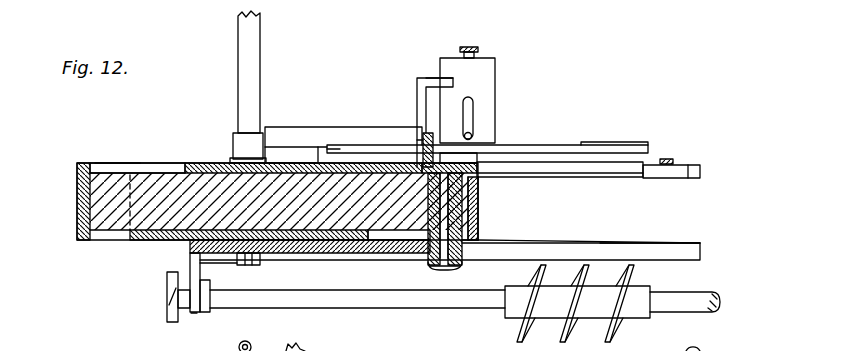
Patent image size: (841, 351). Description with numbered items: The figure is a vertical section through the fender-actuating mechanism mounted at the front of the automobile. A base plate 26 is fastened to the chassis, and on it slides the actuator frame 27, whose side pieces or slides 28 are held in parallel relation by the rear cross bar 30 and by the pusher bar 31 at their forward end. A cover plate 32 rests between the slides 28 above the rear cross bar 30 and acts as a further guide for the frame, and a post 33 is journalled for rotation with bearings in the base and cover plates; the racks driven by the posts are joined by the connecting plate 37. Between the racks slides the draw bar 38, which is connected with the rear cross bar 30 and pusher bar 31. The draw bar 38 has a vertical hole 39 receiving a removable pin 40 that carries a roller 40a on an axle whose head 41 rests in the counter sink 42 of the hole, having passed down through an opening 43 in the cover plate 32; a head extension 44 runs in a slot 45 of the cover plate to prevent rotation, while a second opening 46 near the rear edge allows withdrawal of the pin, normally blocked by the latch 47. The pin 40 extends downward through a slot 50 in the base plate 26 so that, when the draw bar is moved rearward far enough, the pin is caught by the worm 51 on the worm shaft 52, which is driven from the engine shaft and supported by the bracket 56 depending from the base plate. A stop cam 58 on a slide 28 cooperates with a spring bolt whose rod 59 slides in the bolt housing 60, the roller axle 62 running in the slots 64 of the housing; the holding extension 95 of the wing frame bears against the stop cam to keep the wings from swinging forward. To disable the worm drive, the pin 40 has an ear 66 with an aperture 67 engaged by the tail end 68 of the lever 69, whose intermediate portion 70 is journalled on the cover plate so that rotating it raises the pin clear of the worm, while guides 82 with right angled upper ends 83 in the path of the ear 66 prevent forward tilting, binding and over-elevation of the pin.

The base plate 26 is at (700, 250).
The actuator frame 27 is at (118, 160).
The slides 28 is at (163, 166).
The rear cross bar 30 is at (480, 215).
The pusher bar 31 is at (77, 197).
The cover plate 32 is at (213, 160).
The post 33 is at (261, 45).
The connecting plate 37 is at (167, 244).
The draw bar 38 is at (150, 221).
The vertical hole 39 is at (480, 222).
The pin 40 is at (480, 203).
The roller 40a is at (490, 238).
The head 41 is at (416, 168).
The counter sink 42 is at (480, 188).
The opening 43 is at (470, 161).
The head extension 44 is at (478, 170).
The slot 45 is at (613, 162).
The opening 46 is at (680, 179).
The latch 47 is at (668, 158).
The slot 50 is at (691, 242).
The worm 51 is at (518, 332).
The worm shaft 52 is at (413, 304).
The bracket 56 is at (184, 308).
The stop cam 58 is at (299, 131).
The rod 59 is at (479, 50).
The bolt housing 60 is at (488, 76).
The axle 62 is at (472, 136).
The slots 64 is at (470, 113).
The ear 66 is at (422, 135).
The aperture 67 is at (418, 140).
The tail end 68 is at (582, 144).
The lever 69 is at (338, 142).
The intermediate portion 70 is at (327, 140).
The guides 82 is at (417, 84).
The right angled upper ends 83 is at (440, 78).
The holding extension 95 is at (284, 157).